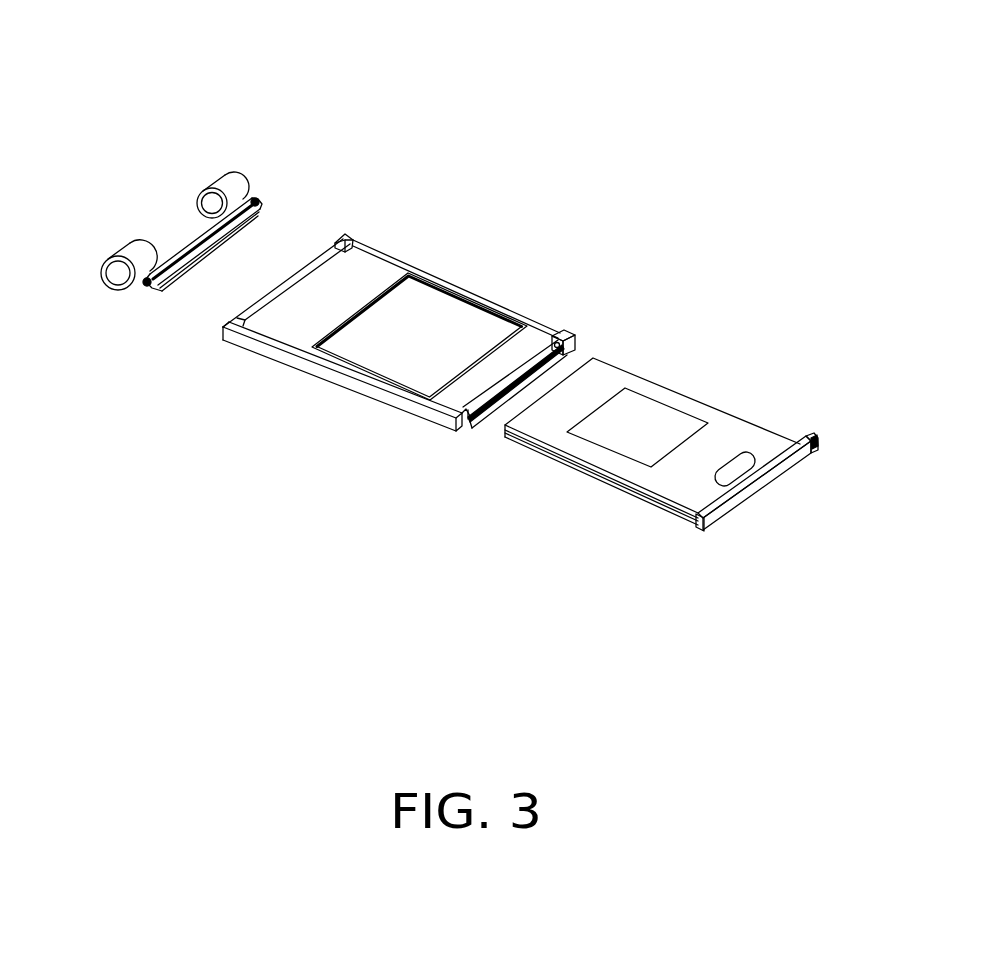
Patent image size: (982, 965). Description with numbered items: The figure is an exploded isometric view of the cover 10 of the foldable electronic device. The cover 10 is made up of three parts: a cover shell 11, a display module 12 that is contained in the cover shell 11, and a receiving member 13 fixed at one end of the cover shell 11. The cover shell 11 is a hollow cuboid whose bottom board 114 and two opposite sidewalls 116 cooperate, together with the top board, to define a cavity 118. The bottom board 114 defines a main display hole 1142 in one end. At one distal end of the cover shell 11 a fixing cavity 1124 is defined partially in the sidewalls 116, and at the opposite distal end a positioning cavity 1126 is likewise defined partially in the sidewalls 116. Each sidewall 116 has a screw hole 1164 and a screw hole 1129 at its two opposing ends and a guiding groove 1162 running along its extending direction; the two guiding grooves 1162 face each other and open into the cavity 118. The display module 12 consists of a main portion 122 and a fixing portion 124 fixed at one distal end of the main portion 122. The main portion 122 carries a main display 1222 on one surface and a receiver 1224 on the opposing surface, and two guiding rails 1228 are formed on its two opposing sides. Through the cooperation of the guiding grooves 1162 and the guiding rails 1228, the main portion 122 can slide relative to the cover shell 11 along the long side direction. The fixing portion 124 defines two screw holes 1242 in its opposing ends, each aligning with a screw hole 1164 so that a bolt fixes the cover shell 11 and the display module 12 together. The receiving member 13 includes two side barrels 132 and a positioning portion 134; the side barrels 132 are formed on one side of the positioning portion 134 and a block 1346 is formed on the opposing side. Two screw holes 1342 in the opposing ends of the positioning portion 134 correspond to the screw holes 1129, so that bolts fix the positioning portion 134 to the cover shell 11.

The cover 10 is at (505, 30).
The cover shell 11 is at (466, 266).
The bottom board 114 is at (372, 262).
The sidewalls 116 is at (338, 378).
The cavity 118 is at (310, 260).
The fixing cavity 1124 is at (468, 415).
The positioning cavity 1126 is at (243, 322).
The screw hole 1129 is at (350, 238).
The main display hole 1142 is at (483, 328).
The guiding groove 1162 is at (563, 352).
The screw hole 1164 is at (558, 333).
The display module 12 is at (699, 371).
The main portion 122 is at (707, 418).
The main display 1222 is at (630, 448).
The receiver 1224 is at (738, 467).
The guiding rails 1228 is at (568, 458).
The fixing portion 124 is at (752, 487).
The screw hole 1242 is at (813, 448).
The receiving member 13 is at (166, 212).
The side barrels 132 is at (122, 257).
The positioning portion 134 is at (173, 260).
The screw hole 1342 is at (147, 285).
The block 1346 is at (185, 278).